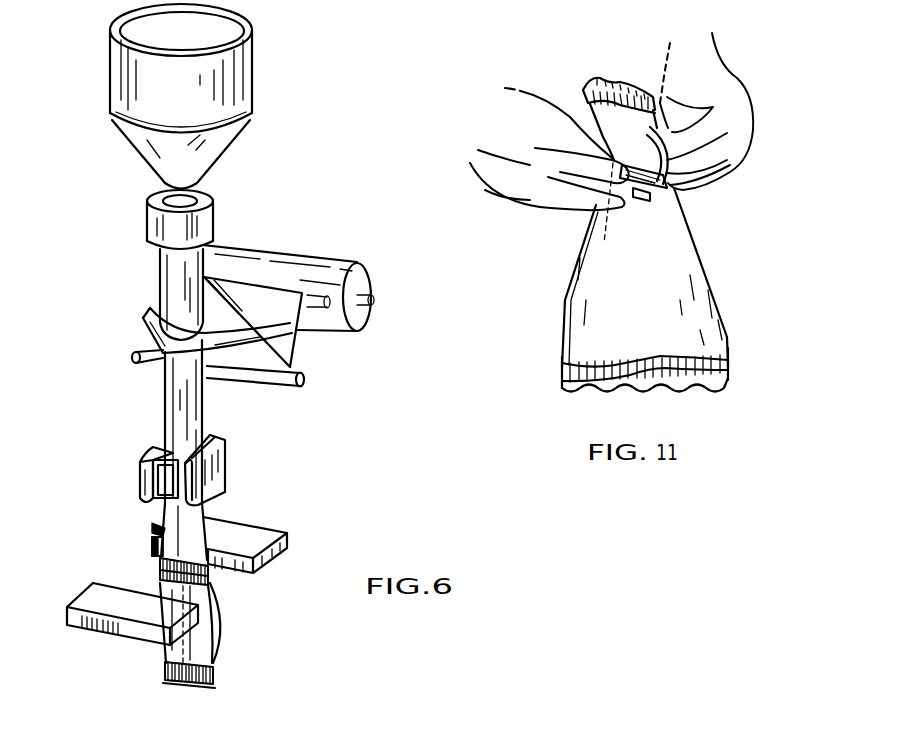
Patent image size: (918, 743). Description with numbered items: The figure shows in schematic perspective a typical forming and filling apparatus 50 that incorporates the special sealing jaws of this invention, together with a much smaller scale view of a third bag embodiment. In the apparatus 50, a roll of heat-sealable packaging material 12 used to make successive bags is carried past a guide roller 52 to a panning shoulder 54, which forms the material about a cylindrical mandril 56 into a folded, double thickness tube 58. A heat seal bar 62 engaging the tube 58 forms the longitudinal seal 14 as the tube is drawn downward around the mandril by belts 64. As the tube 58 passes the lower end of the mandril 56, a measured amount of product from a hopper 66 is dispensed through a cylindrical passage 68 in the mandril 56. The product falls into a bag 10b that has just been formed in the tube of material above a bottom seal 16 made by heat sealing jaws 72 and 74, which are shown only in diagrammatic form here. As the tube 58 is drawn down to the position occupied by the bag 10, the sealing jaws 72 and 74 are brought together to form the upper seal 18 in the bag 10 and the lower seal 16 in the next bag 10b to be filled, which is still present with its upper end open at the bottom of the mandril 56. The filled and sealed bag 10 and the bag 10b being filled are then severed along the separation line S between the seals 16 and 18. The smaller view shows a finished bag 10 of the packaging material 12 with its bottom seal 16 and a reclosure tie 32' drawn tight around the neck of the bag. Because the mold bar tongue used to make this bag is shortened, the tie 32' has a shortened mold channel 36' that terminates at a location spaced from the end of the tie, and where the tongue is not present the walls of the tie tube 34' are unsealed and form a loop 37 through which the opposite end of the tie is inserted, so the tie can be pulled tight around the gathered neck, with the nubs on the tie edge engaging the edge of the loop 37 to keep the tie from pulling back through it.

In FIG. 6, the hopper 66 is at (118, 60).
In FIG. 6, the forming and filling apparatus 50 is at (98, 174).
In FIG. 6, the cylindrical passage 68 is at (146, 199).
In FIG. 6, the cylindrical mandril 56 is at (168, 275).
In FIG. 6, the tube 58 is at (205, 411).
In FIG. 6, the heat-sealable packaging material 12 is at (320, 328).
In FIG. 11, the heat-sealable packaging material 12 is at (697, 257).
In FIG. 6, the panning shoulder 54 is at (232, 312).
In FIG. 6, the guide roller 52 is at (310, 383).
In FIG. 6, the heat seal bar 62 is at (160, 455).
In FIG. 6, the belts 64 is at (139, 462).
In FIG. 6, the bag being filled 10b is at (152, 527).
In FIG. 6, the separation line S is at (158, 572).
In FIG. 6, the longitudinal seal 14 is at (155, 592).
In FIG. 6, the upper seal 18 is at (207, 580).
In FIG. 6, the bottom seal 16 is at (212, 568).
In FIG. 11, the bottom seal 16 is at (729, 364).
In FIG. 6, the bag 10 is at (222, 650).
In FIG. 11, the bag 10 is at (563, 300).
In FIG. 6, the heat sealing jaw 74 is at (263, 530).
In FIG. 6, the heat sealing jaw 72 is at (95, 589).
In FIG. 11, the reclosure tie 32' is at (623, 134).
In FIG. 11, the tie tube 34' is at (695, 179).
In FIG. 11, the clamp body 37 is at (652, 194).
In FIG. 11, the shortened mold channel 36' is at (626, 216).